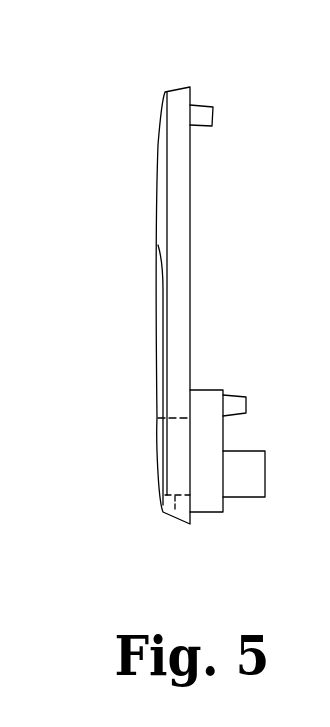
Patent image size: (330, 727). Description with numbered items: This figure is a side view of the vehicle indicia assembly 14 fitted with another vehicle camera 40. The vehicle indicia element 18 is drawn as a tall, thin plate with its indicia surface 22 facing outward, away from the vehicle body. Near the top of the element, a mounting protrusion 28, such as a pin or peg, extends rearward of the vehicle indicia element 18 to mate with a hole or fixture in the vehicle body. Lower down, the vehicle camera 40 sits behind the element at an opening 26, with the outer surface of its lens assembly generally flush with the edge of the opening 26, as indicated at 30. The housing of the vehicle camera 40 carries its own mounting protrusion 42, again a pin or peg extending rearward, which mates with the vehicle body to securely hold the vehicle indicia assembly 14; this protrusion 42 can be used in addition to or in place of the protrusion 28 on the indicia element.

The vehicle indicia assembly 14 is at (157, 74).
The vehicle indicia element 18 is at (190, 213).
The indicia surface 22 is at (158, 276).
The opening 26 is at (168, 519).
The mounting protrusion 28 is at (203, 113).
The flush indication 30 is at (158, 418).
The vehicle camera 40 is at (213, 512).
The mounting protrusion 42 is at (232, 403).